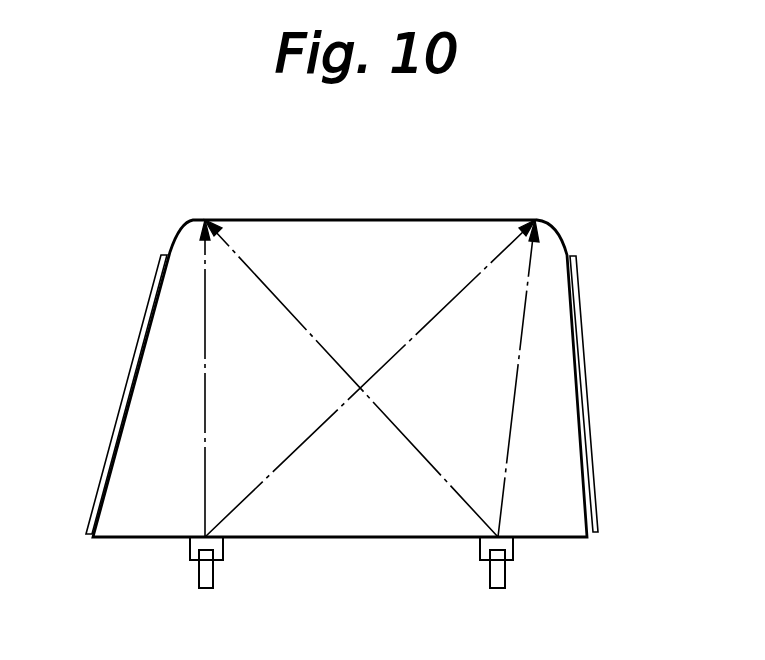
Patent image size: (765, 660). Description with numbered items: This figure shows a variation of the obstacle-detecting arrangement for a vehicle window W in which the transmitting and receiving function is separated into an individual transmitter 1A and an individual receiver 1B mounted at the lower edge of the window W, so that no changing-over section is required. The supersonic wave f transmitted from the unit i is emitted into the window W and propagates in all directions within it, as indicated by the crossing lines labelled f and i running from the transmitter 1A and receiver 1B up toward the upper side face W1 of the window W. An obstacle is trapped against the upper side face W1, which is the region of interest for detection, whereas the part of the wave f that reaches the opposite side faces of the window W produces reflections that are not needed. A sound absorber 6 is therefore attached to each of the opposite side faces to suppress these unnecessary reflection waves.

The window W is at (577, 217).
The upper side face W1 is at (565, 193).
The sound absorber 6 is at (153, 286).
The transmitter 1A is at (506, 583).
The receiver 1B is at (198, 581).
The supersonic wave f is at (265, 284).
The unit i is at (207, 386).